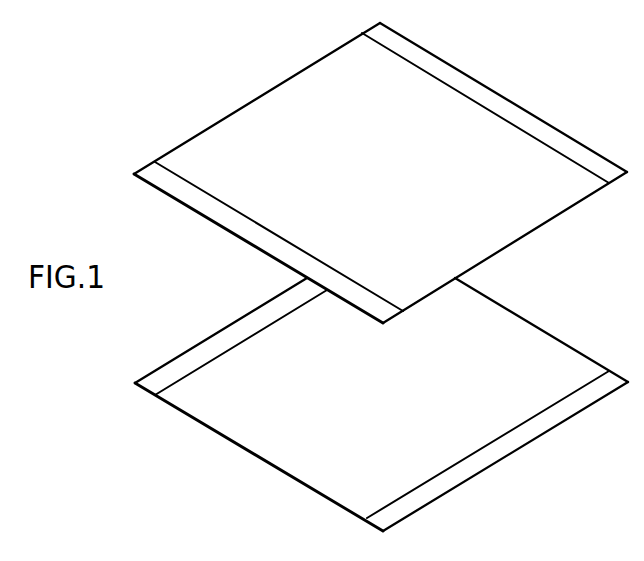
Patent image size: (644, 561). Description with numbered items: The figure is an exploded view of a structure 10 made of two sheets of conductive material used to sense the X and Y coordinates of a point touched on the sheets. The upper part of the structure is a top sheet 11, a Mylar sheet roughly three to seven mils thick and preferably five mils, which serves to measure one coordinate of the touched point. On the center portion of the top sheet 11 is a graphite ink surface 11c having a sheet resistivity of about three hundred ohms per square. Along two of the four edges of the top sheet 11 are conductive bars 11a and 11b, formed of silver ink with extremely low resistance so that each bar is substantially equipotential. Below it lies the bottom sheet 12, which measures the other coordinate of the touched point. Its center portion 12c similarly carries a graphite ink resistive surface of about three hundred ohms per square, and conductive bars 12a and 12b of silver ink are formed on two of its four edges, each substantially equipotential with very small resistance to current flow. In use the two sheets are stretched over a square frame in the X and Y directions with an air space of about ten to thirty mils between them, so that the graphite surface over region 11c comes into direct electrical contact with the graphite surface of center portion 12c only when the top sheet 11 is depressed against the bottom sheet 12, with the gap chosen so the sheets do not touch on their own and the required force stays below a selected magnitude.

The structure 10 is at (203, 76).
The top sheet 11 is at (570, 211).
The conductive bar 11a is at (498, 103).
The conductive bar 11b is at (250, 235).
The graphite ink surface 11c is at (312, 110).
The bottom sheet 12 is at (282, 472).
The conductive bar 12a is at (232, 340).
The conductive bar 12b is at (533, 430).
The center portion 12c is at (505, 335).